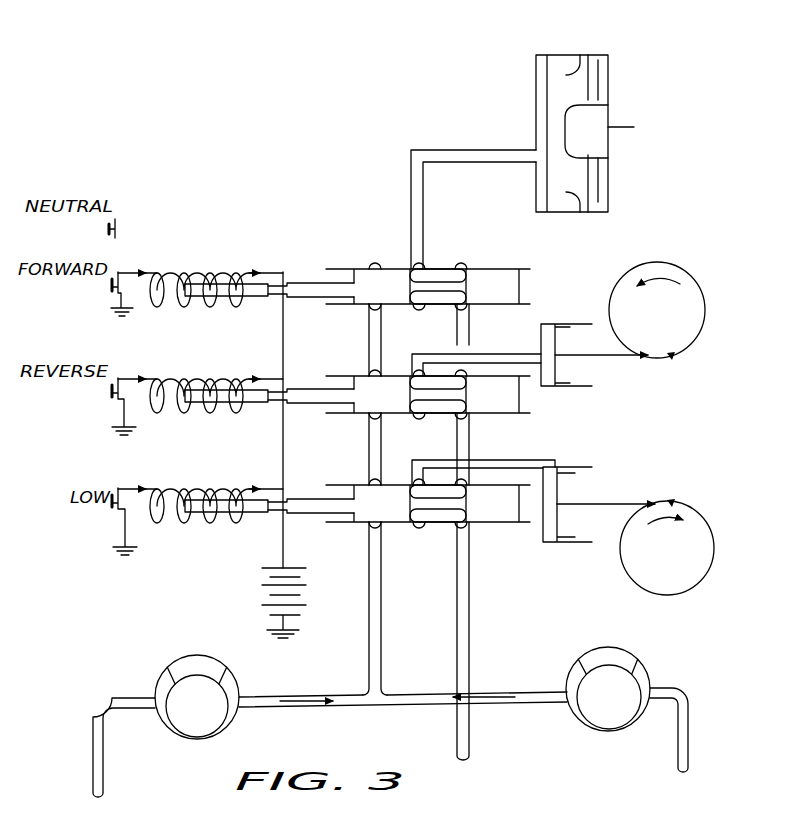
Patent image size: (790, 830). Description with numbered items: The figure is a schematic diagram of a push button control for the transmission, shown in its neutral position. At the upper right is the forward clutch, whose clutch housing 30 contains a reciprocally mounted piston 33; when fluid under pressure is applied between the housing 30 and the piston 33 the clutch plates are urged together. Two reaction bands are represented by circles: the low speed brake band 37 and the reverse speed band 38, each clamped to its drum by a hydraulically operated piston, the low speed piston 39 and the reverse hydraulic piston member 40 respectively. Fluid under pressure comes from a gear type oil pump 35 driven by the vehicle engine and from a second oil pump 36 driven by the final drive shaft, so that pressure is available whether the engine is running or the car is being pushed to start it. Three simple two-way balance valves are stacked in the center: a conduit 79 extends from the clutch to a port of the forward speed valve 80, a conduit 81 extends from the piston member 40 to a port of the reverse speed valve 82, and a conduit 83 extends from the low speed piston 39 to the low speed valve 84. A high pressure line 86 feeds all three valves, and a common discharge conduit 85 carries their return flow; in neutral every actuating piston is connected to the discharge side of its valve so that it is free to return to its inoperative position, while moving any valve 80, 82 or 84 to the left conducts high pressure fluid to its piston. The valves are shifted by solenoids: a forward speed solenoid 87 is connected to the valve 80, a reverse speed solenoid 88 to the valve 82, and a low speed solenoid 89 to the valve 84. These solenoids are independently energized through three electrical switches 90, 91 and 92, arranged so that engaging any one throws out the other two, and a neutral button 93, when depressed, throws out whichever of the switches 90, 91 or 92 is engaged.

The clutch housing 30 is at (534, 77).
The piston 33 is at (558, 72).
The gear type oil pump 35 is at (156, 688).
The second oil pump 36 is at (646, 670).
The low speed brake band 37 is at (703, 517).
The reverse speed band 38 is at (672, 263).
The low speed piston 39 is at (557, 487).
The hydraulic piston member 40 is at (555, 367).
The conduit 79 is at (411, 150).
The forward speed valve 80 is at (488, 277).
The conduit 81 is at (500, 352).
The reverse speed valve 82 is at (498, 398).
The conduit 83 is at (527, 458).
The low speed valve 84 is at (493, 508).
The discharge conduit 85 is at (470, 582).
The high pressure line 86 is at (369, 596).
The forward speed solenoid 87 is at (227, 273).
The reverse speed solenoid 88 is at (200, 380).
The low speed solenoid 89 is at (181, 490).
The electrical switch 90 is at (110, 282).
The electrical switch 91 is at (110, 399).
The electrical switch 92 is at (113, 518).
The neutral button 93 is at (118, 221).